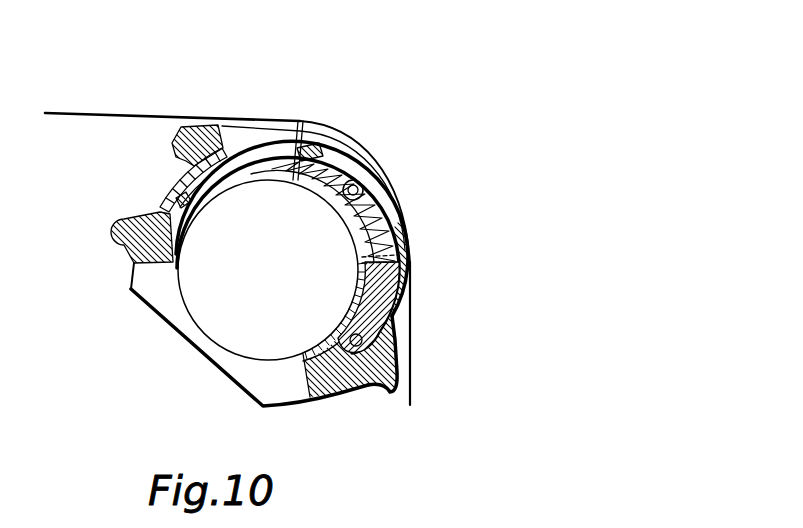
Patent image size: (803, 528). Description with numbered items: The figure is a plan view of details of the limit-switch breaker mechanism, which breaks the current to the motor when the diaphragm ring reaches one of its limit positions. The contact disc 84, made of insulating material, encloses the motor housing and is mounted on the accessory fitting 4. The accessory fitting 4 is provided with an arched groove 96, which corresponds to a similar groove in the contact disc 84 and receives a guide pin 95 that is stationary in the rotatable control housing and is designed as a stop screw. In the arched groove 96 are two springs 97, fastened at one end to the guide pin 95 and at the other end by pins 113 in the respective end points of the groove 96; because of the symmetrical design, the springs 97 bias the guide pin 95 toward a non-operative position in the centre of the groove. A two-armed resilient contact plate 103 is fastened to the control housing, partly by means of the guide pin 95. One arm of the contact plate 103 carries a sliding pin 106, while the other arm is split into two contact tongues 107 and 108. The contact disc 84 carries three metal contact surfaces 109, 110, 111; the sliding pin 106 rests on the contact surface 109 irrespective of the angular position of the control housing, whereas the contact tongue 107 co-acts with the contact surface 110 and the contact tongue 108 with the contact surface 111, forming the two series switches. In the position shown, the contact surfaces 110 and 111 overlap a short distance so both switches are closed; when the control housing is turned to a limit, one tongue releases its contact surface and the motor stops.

The accessory fitting 4 is at (80, 128).
The contact disc 84 is at (150, 289).
The guide pin 95 is at (364, 182).
The arched groove 96 is at (395, 198).
The springs 97 is at (343, 142).
The contact plate 103 is at (256, 150).
The sliding pin 106 is at (422, 302).
The contact tongue 107 is at (168, 190).
The contact tongue 108 is at (200, 190).
The contact surface 109 is at (357, 388).
The contact surface 110 is at (172, 147).
The contact surface 111 is at (120, 243).
The pins 113 is at (307, 127).